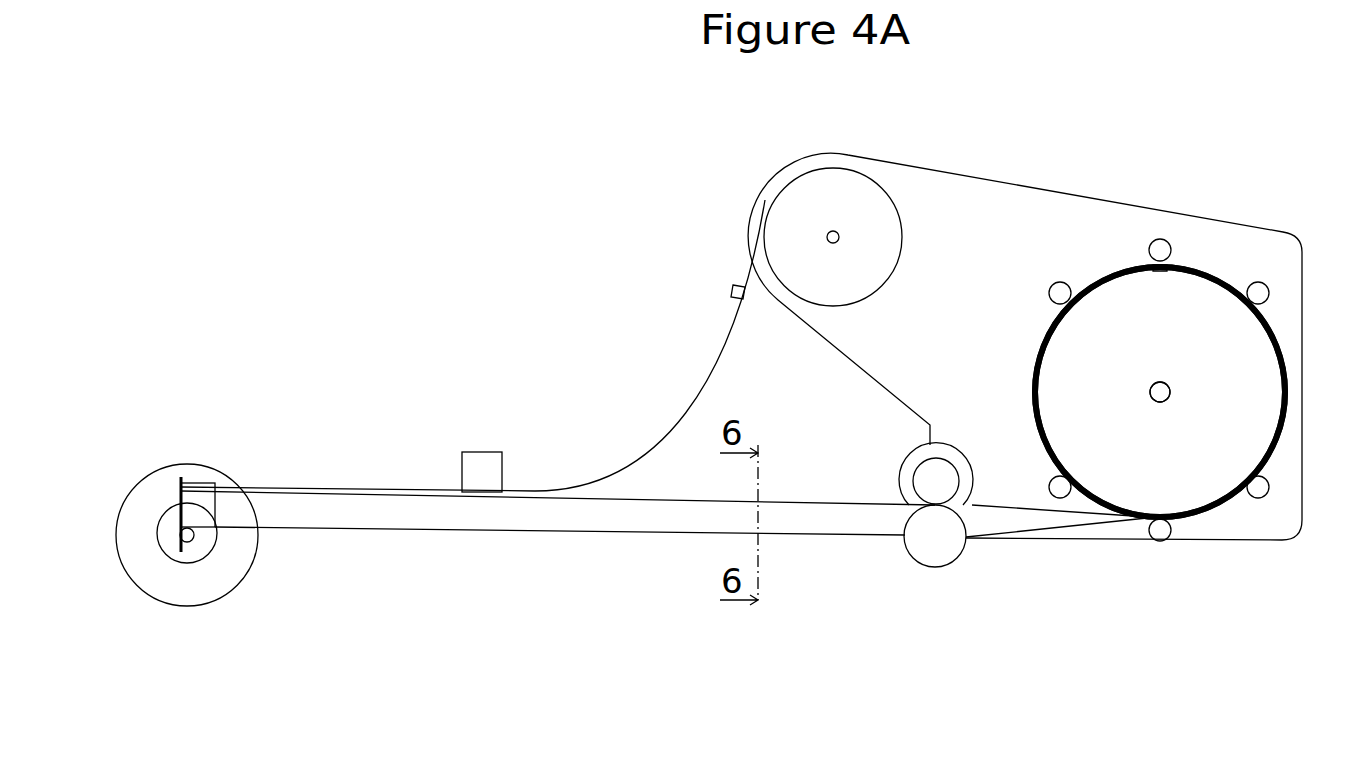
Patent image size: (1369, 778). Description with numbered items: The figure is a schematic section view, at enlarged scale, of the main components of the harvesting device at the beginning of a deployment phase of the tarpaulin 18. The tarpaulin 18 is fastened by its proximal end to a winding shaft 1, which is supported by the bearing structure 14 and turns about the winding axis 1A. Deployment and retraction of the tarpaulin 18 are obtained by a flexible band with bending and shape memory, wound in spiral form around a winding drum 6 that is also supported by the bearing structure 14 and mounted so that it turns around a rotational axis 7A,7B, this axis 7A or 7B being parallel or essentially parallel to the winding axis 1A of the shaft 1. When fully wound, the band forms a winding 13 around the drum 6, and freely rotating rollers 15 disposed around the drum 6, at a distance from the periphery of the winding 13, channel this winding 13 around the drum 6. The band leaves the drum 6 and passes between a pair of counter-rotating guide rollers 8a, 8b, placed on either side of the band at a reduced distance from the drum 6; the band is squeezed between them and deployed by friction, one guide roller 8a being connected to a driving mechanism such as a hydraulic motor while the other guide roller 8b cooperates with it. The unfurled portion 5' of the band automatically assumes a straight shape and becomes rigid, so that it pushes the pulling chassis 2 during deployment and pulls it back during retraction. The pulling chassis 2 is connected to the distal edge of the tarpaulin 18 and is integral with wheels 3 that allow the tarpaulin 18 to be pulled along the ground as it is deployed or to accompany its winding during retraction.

The winding shaft 1 is at (779, 183).
The winding axis 1A is at (827, 233).
The bearing structure 14 is at (1018, 183).
The tarpaulin 18 is at (668, 436).
The winding drum 6 is at (1188, 342).
The winding 13 is at (1213, 507).
The rotational axis 7A,7B is at (1251, 545).
The rotational axis 7A is at (1251, 545).
The rotational axis 7B is at (1162, 400).
The freely rotating rollers 15 is at (1258, 293).
The guide roller 8a is at (942, 478).
The guide roller 8b is at (935, 536).
The unfurled portion of band 5' is at (664, 559).
The wheels 3 is at (222, 557).
The pulling chassis 2 is at (198, 505).